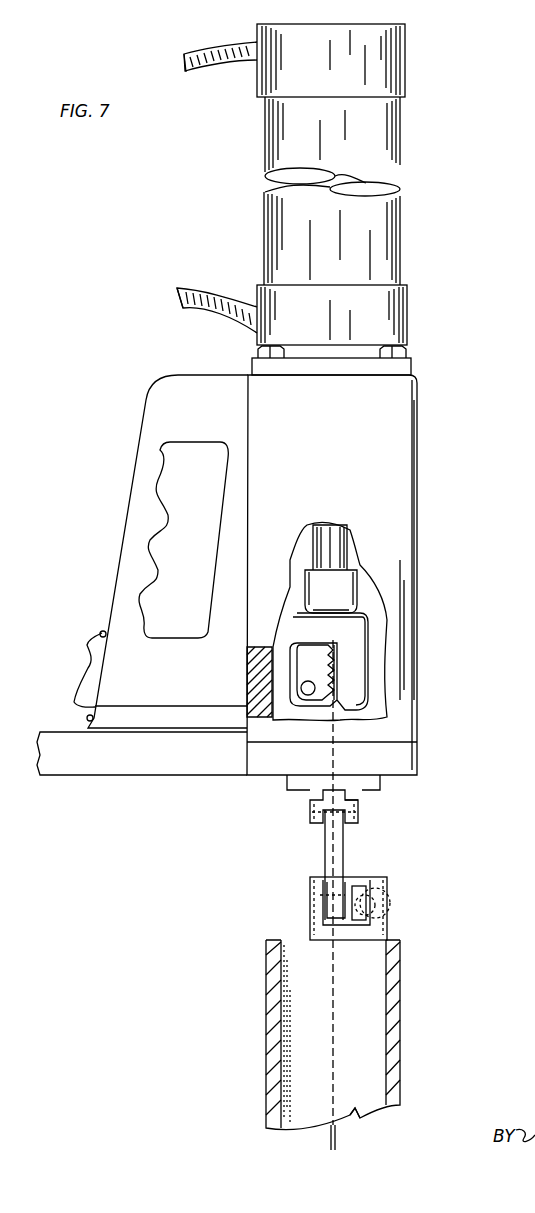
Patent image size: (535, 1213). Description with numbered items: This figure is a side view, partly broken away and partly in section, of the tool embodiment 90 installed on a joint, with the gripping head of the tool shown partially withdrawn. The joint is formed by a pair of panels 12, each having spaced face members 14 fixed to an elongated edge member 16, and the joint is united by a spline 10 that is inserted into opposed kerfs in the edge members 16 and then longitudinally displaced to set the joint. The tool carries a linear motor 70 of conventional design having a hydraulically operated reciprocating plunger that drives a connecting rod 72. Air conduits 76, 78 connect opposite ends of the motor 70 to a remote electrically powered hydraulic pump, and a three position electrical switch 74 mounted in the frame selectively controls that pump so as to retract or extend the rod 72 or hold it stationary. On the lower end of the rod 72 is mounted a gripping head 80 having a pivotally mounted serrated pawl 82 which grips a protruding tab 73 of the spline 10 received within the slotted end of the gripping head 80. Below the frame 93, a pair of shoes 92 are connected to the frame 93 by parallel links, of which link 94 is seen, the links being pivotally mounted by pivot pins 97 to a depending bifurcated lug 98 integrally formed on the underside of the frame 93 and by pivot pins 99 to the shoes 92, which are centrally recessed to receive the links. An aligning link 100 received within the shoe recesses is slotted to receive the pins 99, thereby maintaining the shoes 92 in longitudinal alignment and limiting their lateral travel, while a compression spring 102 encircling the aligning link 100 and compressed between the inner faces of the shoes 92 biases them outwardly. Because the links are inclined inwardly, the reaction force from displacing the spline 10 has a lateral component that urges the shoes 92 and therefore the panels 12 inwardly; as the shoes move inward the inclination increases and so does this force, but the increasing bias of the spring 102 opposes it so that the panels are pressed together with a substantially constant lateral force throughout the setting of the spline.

The spline 10 is at (325, 1150).
The panels 12 is at (327, 1034).
The face members 14 is at (270, 1040).
The edge members 16 is at (364, 1115).
The linear motor 70 is at (343, 161).
The connecting rod 72 is at (345, 545).
The protruding tab 73 is at (337, 652).
The three position electrical switch 74 is at (93, 660).
The air conduit 76 is at (204, 306).
The air conduit 78 is at (218, 56).
The gripping head 80 is at (370, 705).
The serrated pawl 82 is at (326, 672).
The tool embodiment 90 is at (430, 427).
The shoes 92 is at (387, 925).
The frame 93 is at (336, 454).
The parallel link 94 is at (344, 851).
The pivot pins 97 is at (310, 802).
The bifurcated lug 98 is at (365, 790).
The pivot pins 99 is at (312, 918).
The aligning link 100 is at (368, 870).
The compression spring 102 is at (380, 885).